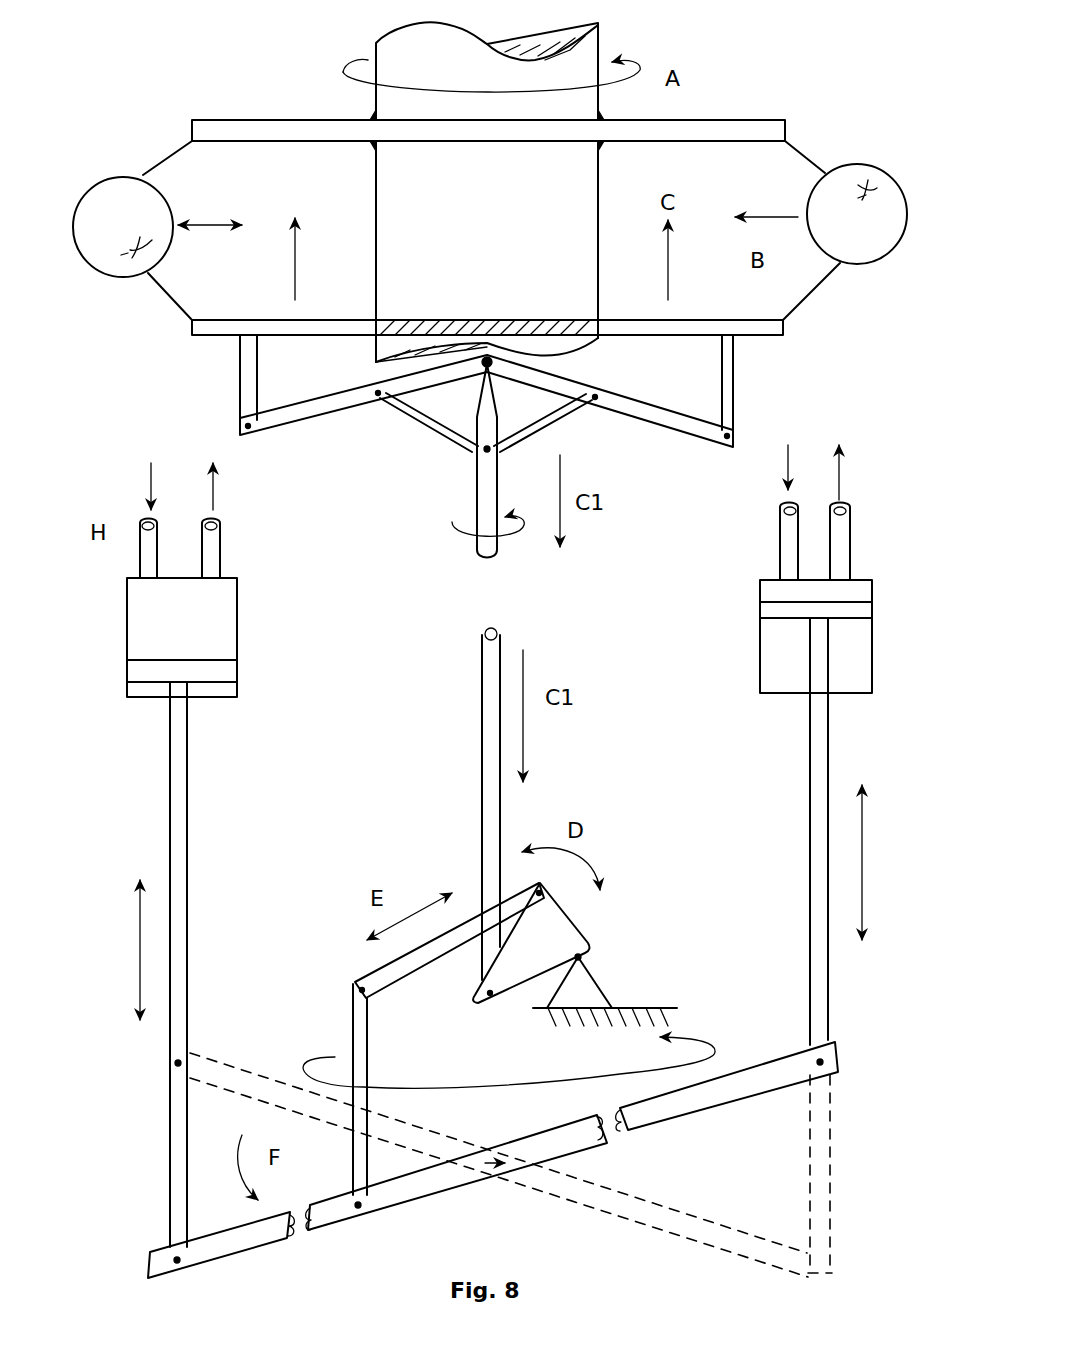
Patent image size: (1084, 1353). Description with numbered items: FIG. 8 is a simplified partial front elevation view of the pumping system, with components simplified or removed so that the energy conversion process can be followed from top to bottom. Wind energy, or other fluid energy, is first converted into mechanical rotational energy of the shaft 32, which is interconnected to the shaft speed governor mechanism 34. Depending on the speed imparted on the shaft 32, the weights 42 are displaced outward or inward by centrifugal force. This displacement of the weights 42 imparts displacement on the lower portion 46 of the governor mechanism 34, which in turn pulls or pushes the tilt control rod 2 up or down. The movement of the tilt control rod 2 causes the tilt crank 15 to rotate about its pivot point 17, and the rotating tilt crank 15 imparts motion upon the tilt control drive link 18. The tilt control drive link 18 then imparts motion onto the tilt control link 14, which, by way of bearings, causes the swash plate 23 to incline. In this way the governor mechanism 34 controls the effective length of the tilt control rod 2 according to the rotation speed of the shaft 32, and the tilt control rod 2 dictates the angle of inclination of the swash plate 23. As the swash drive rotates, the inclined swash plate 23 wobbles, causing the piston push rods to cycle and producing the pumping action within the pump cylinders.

The tilt control rod 2 is at (486, 693).
The tilt control link 14 is at (365, 1072).
The tilt crank 15 is at (562, 940).
The pivot point 17 is at (590, 951).
The tilt control drive link 18 is at (470, 930).
The swash plate 23 is at (722, 1097).
The shaft 32 is at (583, 70).
The shaft speed governor mechanism 34 is at (827, 157).
The weights 42 is at (124, 152).
The lower portion of the governor mechanism 46 is at (766, 335).